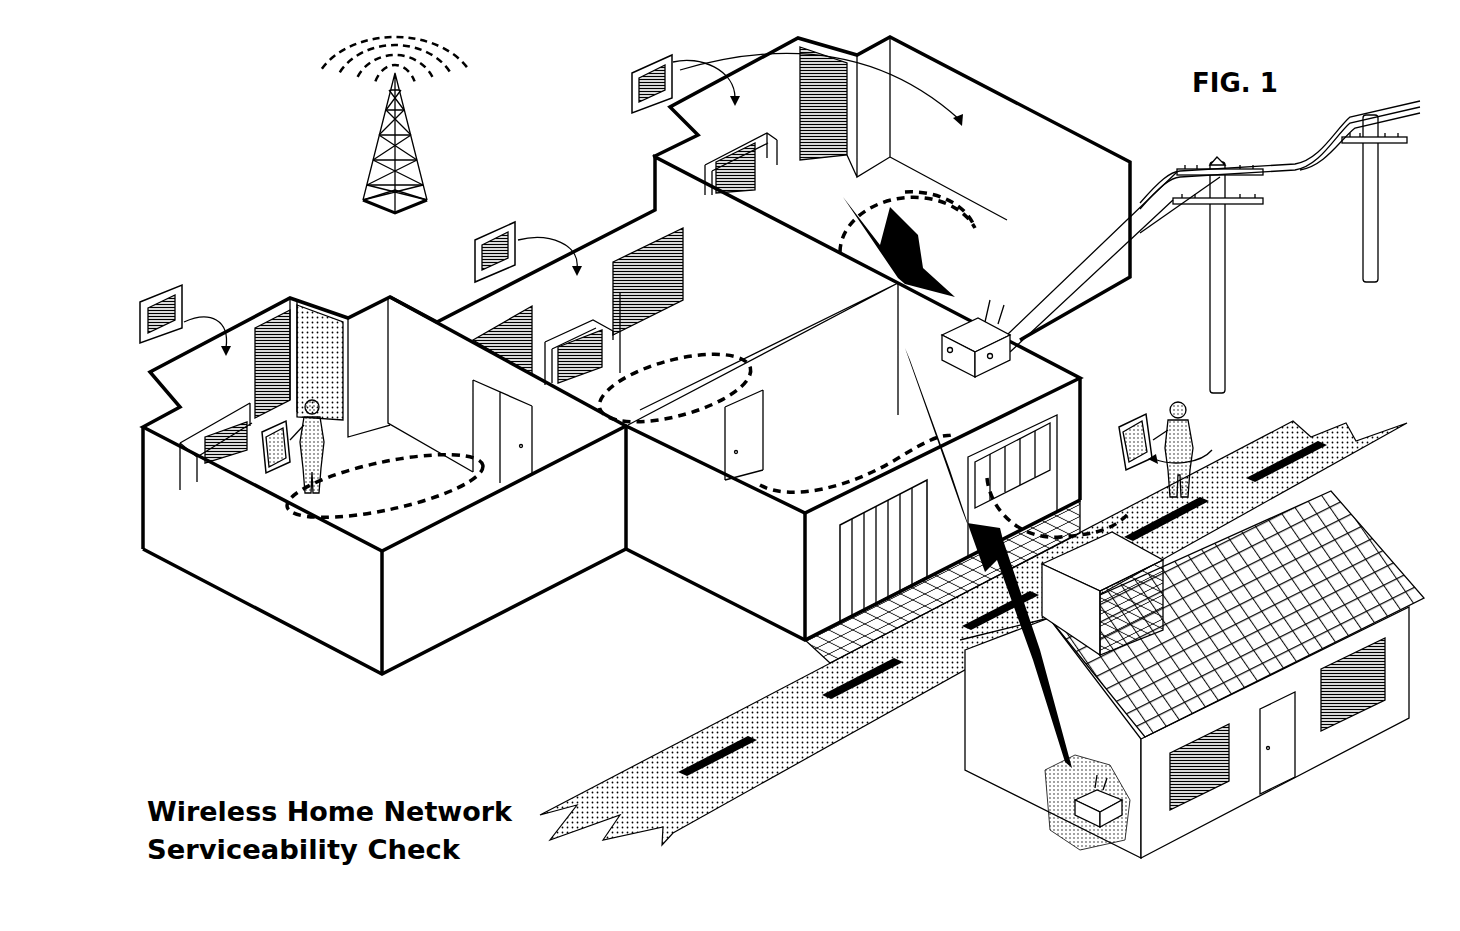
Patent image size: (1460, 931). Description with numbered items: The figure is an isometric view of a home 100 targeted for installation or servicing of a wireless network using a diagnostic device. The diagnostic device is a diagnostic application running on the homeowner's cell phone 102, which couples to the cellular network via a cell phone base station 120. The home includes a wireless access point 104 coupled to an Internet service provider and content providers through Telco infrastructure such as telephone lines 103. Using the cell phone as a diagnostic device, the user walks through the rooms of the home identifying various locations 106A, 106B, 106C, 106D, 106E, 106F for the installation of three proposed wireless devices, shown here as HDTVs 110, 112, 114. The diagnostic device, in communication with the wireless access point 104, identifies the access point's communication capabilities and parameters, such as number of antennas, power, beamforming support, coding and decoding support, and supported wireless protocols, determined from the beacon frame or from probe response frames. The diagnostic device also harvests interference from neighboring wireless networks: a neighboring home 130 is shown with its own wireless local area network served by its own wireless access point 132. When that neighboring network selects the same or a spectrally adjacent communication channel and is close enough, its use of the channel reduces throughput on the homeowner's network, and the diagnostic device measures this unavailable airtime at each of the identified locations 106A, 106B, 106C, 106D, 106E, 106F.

The home 100 is at (368, 668).
The cell phone 102 is at (1143, 410).
The telephone lines 103 is at (1297, 150).
The wireless access point 104 is at (950, 334).
The location 106A is at (1126, 515).
The location 106B is at (905, 425).
The location 106C is at (339, 472).
The location 106D is at (677, 358).
The location 106E is at (797, 180).
The location 106F is at (948, 200).
The HDTV 110 is at (187, 293).
The HDTV 112 is at (472, 263).
The HDTV 114 is at (630, 97).
The base station 120 is at (412, 140).
The neighboring home 130 is at (960, 764).
The WAP 132 is at (1075, 821).